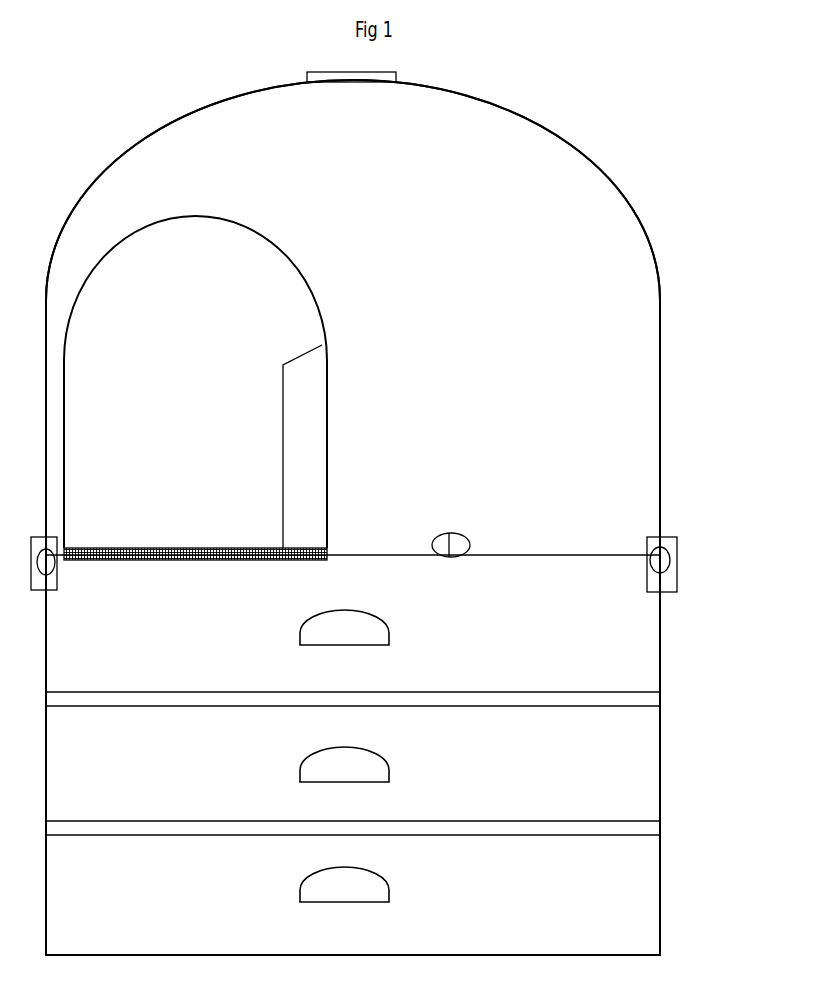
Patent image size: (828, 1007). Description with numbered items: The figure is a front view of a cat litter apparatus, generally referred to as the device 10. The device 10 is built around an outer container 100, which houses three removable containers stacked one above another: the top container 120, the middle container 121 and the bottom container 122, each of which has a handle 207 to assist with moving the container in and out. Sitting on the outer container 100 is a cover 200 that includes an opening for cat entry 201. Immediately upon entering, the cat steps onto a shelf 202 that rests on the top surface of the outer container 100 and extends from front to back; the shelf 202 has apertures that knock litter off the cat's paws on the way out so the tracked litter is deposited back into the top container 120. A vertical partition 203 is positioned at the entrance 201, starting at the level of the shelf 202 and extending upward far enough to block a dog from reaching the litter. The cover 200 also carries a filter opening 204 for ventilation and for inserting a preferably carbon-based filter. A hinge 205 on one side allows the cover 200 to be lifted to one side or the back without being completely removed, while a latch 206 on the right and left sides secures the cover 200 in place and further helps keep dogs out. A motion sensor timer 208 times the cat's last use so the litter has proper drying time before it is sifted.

The device 10 is at (100, 129).
The outer container 100 is at (660, 848).
The top container 120 is at (566, 650).
The middle container 121 is at (572, 752).
The bottom container 122 is at (572, 890).
The cover 200 is at (513, 193).
The opening for cat entry 201 is at (250, 307).
The shelf 202 is at (177, 545).
The partition wall 203 is at (313, 455).
The filter opening 204 is at (396, 77).
The hinge 205 is at (33, 543).
The latch 206 is at (48, 556).
The handle 207 is at (348, 625).
The motion sensor timer 208 is at (455, 545).